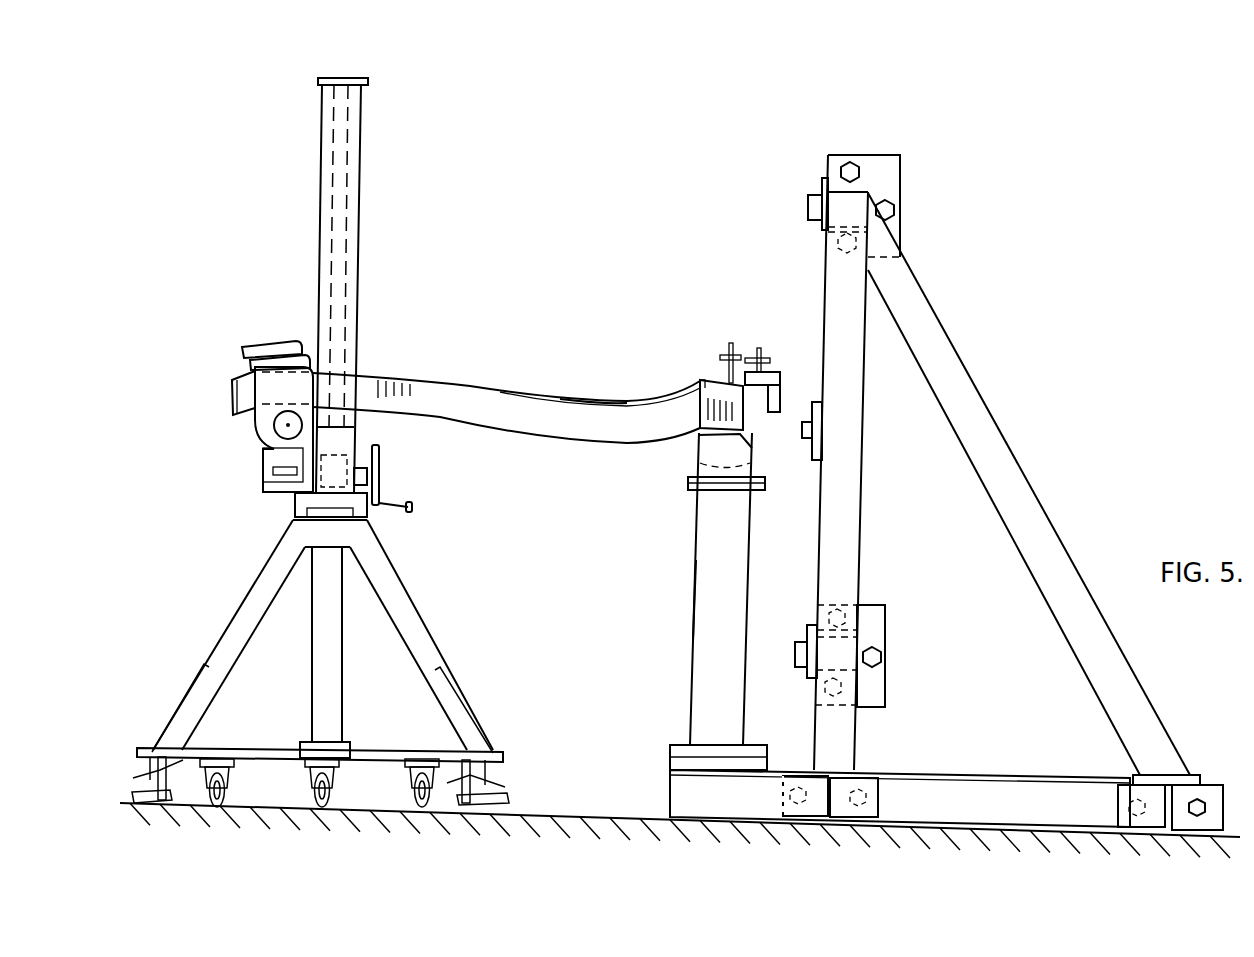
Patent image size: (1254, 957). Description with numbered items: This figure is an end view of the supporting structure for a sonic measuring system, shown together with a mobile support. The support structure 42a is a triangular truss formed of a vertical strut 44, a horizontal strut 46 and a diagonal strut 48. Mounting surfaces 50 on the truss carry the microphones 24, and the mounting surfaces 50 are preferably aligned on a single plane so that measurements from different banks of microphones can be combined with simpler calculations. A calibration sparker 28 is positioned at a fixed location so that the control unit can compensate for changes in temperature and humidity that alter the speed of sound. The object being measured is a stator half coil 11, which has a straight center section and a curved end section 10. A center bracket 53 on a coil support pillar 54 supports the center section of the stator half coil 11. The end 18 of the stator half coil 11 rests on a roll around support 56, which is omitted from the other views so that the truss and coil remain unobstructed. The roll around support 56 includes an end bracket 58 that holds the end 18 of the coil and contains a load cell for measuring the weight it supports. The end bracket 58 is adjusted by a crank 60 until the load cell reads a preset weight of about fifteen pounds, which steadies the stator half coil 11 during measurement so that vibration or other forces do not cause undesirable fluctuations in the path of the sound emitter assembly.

The curved end section 10 is at (565, 427).
The stator half coil 11 is at (631, 392).
The end of the stator half coil 18 is at (227, 390).
The microphone 24 is at (808, 208).
The calibration sparker 28 is at (807, 442).
The support structure 42a is at (680, 649).
The vertical strut 44 is at (847, 482).
The horizontal strut 46 is at (1028, 792).
The diagonal strut 48 is at (1013, 527).
The mounting surface 50 is at (822, 232).
The center bracket 53 is at (780, 360).
The coil support pillar 54 is at (703, 528).
The roll around support 56 is at (408, 568).
The end bracket 58 is at (270, 437).
The crank 60 is at (380, 467).